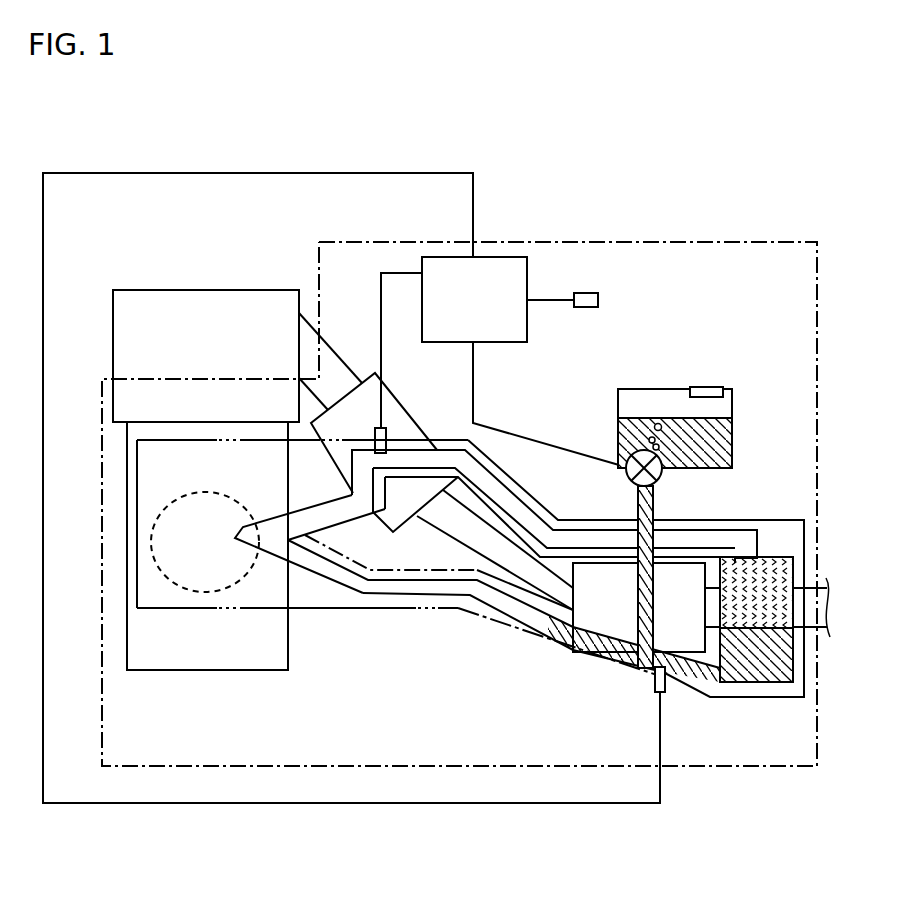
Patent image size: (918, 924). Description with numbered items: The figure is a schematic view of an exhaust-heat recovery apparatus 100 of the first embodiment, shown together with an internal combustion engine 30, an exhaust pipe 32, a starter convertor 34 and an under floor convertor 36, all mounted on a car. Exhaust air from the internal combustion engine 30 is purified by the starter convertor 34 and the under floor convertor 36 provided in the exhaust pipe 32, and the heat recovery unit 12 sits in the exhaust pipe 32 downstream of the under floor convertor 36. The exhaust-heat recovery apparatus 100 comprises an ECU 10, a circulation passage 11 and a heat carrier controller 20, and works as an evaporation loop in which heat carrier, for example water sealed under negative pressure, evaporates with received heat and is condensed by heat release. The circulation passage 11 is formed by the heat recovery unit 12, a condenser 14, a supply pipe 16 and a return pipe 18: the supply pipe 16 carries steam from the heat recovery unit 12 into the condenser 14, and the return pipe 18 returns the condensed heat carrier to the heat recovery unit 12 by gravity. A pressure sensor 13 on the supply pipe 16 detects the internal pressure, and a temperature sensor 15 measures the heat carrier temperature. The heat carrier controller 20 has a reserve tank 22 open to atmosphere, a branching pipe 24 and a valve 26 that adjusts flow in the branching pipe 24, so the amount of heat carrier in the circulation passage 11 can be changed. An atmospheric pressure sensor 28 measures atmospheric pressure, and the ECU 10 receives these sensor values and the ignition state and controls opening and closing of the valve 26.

The exhaust-heat recovery apparatus 100 is at (318, 264).
The ECU 10 is at (510, 343).
The circulation passage 11 is at (383, 610).
The heat recovery unit 12 is at (757, 683).
The pressure sensor 13 is at (374, 443).
The condenser 14 is at (148, 545).
The temperature sensor 15 is at (655, 683).
The supply pipe 16 is at (523, 492).
The return pipe 18 is at (496, 607).
The heat carrier controller 20 is at (705, 494).
The reserve tank 22 is at (672, 388).
The branching pipe 24 is at (655, 503).
The valve 26 is at (665, 478).
The atmospheric pressure sensor 28 is at (598, 300).
The internal combustion engine 30 is at (163, 290).
The exhaust pipe 32 is at (340, 360).
The starter convertor 34 is at (400, 408).
The under floor convertor 36 is at (594, 562).